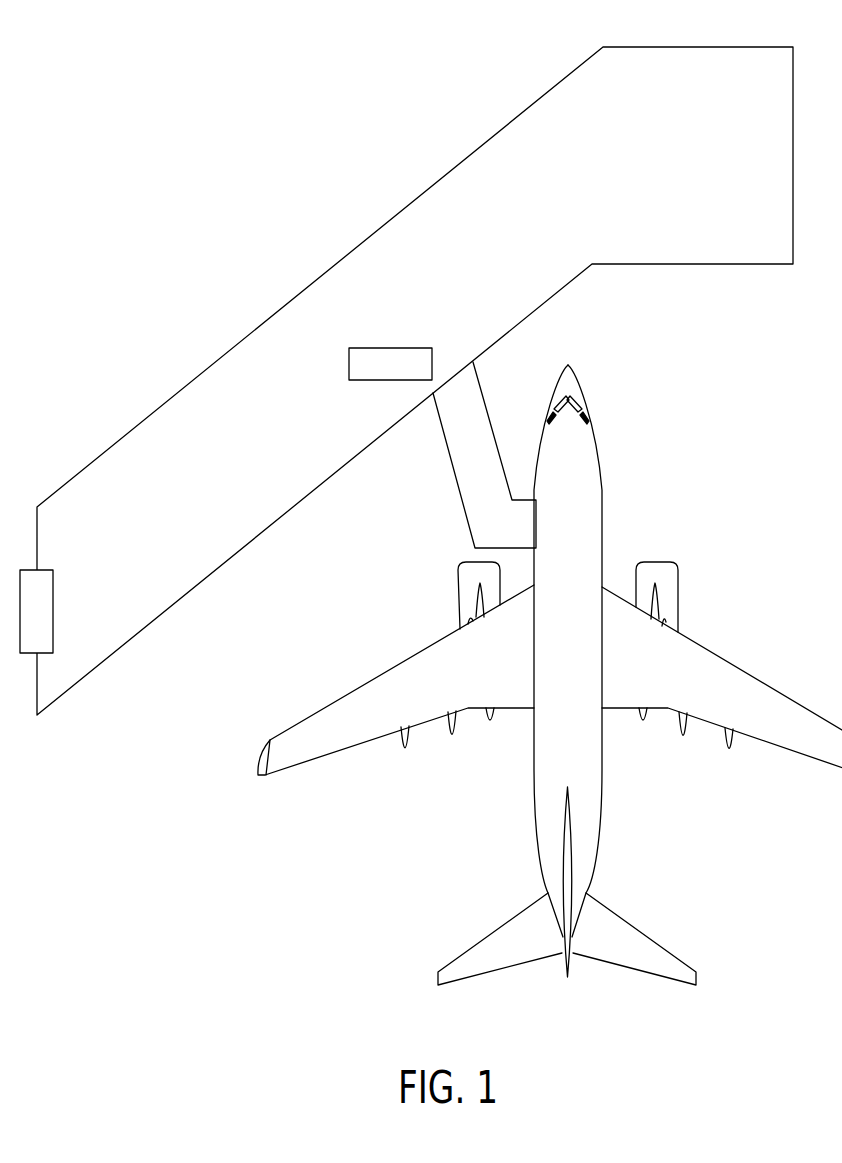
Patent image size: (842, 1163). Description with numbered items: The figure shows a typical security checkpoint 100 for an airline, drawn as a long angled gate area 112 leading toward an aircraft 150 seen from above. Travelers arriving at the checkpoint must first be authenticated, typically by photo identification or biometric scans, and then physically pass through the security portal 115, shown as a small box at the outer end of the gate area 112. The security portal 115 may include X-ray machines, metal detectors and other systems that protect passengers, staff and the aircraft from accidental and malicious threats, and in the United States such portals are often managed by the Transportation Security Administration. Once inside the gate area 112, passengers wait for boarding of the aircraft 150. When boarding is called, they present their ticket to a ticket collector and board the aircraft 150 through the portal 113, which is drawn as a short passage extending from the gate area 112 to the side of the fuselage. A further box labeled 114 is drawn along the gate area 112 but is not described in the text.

The security checkpoint 100 is at (200, 103).
The gate area 112 is at (165, 417).
The portal 113 is at (455, 477).
The control unit 114 is at (392, 346).
The security portal 115 is at (53, 598).
The aircraft 150 is at (602, 520).